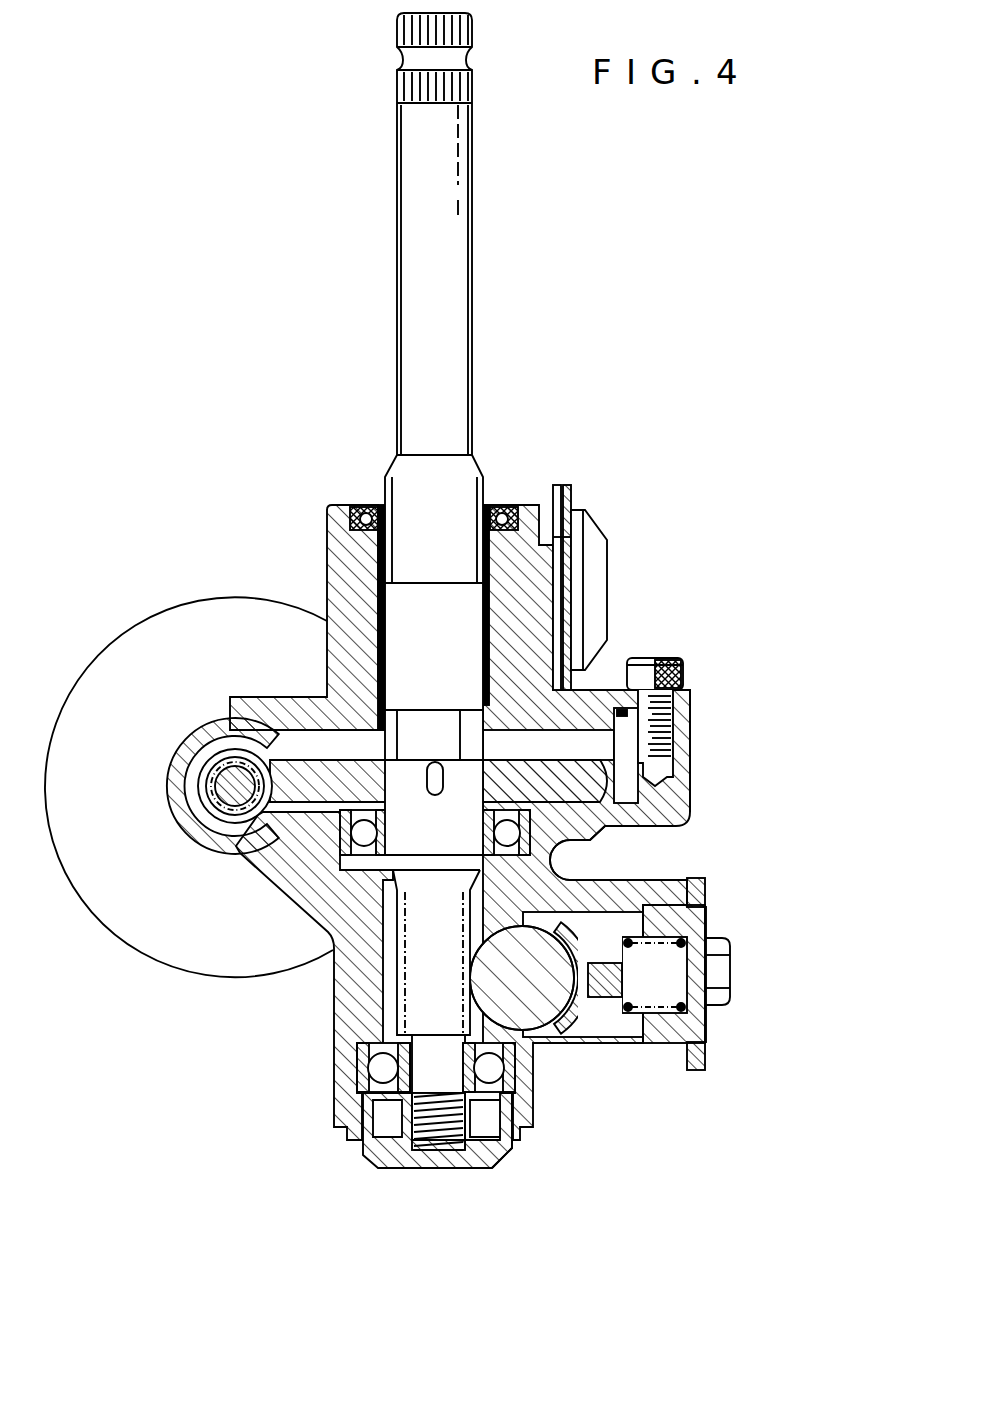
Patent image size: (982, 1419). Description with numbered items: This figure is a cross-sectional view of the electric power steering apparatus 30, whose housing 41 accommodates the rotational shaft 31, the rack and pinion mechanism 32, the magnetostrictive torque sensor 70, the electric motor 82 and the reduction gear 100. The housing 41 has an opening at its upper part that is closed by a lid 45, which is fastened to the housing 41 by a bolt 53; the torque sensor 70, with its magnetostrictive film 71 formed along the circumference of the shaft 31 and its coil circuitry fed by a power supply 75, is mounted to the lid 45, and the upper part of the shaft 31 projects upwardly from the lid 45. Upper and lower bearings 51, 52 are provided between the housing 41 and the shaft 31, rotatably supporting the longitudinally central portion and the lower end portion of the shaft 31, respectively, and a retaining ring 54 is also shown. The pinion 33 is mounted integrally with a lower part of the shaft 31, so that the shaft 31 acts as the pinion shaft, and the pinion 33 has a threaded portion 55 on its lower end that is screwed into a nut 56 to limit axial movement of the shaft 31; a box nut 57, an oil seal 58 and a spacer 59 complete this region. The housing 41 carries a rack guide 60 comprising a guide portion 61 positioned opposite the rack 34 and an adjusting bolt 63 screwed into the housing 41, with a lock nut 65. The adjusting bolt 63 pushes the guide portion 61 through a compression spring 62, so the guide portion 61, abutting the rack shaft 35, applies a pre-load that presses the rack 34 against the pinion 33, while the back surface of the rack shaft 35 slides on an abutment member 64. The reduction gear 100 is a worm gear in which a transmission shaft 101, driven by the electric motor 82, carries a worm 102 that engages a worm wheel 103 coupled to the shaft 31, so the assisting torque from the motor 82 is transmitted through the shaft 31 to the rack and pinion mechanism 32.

The electric power steering apparatus 30 is at (137, 188).
The rotational shaft 31 is at (445, 232).
The rack and pinion mechanism 32 is at (395, 940).
The pinion 33 is at (470, 952).
The rack 34 is at (460, 985).
The rack shaft 35 is at (533, 1010).
The housing 41 is at (692, 750).
The lid 45 is at (612, 655).
The upper bearing 51 is at (365, 1055).
The lower bearing 52 is at (343, 830).
The bolt 53 is at (665, 665).
The retaining ring 54 is at (362, 890).
The threaded portion 55 is at (427, 1140).
The nut 56 is at (490, 1135).
The box nut 57 is at (495, 1155).
The oil seal 58 is at (506, 495).
The spacer 59 is at (600, 835).
The rack guide 60 is at (753, 1028).
The guide portion 61 is at (660, 1050).
The compression spring 62 is at (708, 1010).
The adjusting bolt 63 is at (735, 968).
The abutment member 64 is at (545, 965).
The lock nut 65 is at (705, 893).
The magnetostrictive torque sensor 70 is at (545, 622).
The magnetostrictive film 71 is at (432, 620).
The power supply 75 is at (606, 546).
The electric motor 82 is at (172, 614).
The reduction gear 100 is at (185, 812).
The transmission shaft 101 is at (210, 790).
The worm 102 is at (205, 762).
The worm wheel 103 is at (278, 790).